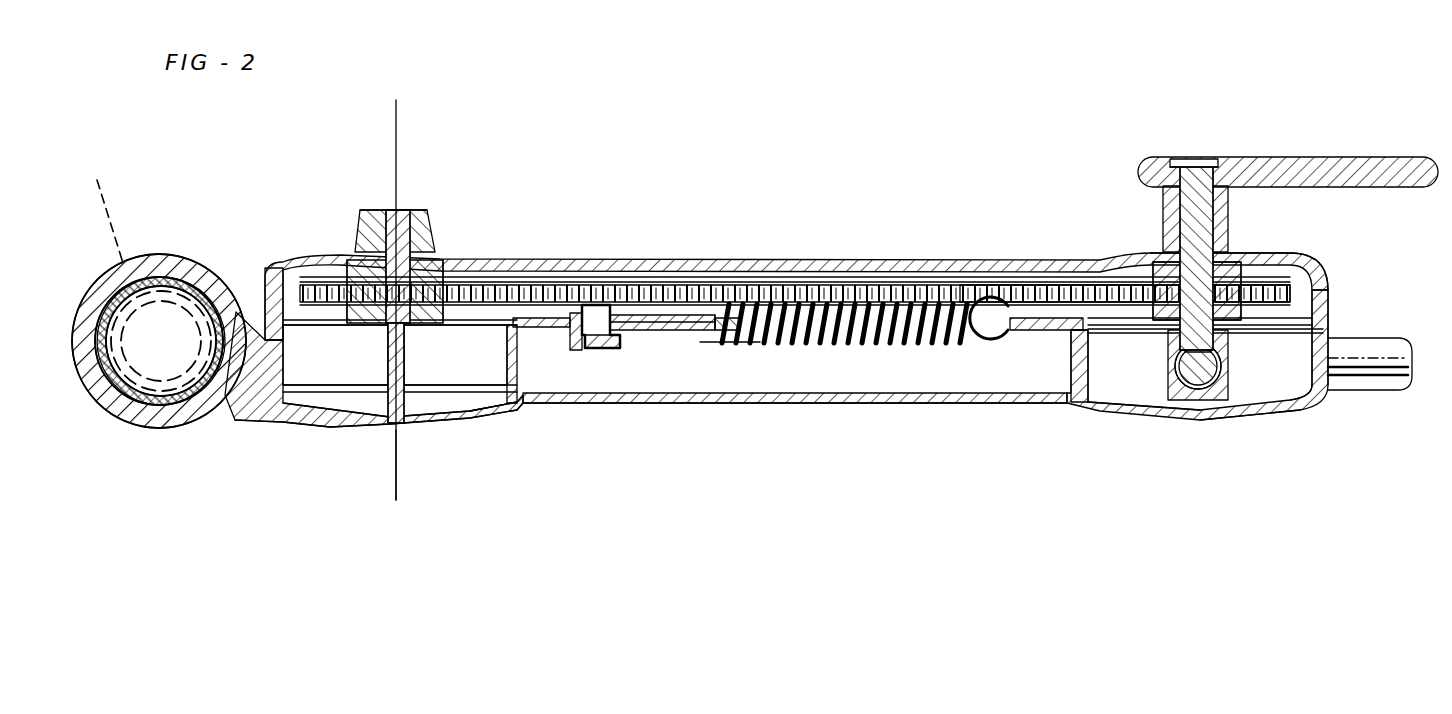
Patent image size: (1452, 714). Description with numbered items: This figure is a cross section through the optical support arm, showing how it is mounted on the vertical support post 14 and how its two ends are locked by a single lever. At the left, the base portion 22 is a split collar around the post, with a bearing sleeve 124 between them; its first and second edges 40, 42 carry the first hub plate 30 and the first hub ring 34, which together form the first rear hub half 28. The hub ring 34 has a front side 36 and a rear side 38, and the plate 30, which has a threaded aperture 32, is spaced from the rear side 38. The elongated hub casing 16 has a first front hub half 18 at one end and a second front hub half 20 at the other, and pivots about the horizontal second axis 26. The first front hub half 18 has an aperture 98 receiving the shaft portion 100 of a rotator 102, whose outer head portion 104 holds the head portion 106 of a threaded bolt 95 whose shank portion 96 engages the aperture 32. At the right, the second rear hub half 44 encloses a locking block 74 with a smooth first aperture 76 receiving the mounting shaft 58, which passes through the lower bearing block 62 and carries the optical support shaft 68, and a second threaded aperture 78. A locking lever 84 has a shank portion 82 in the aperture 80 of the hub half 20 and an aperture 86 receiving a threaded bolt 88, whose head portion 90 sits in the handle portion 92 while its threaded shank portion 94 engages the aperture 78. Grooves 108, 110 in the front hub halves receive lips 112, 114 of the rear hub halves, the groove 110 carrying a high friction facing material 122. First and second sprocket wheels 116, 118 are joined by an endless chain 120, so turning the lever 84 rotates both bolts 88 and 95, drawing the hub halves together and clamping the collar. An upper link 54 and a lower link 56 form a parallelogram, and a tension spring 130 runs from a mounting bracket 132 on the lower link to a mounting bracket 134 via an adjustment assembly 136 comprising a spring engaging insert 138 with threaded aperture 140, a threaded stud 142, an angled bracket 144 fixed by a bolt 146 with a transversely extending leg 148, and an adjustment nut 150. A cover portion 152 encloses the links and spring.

The vertical support post 14 is at (103, 210).
The hub casing 16 is at (753, 257).
The first front hub half 18 is at (320, 248).
The second front hub half 20 is at (1333, 267).
The base portion 22 is at (134, 428).
The second horizontally oriented axis 26 is at (396, 495).
The first rear hub half 28 is at (323, 428).
The first hub plate 30 is at (474, 418).
The threaded aperture 32 is at (377, 423).
The first hub ring 34 is at (516, 418).
The front side 36 is at (274, 268).
The rear side 38 is at (272, 415).
The first edge 40 is at (225, 312).
The second edge 42 is at (231, 418).
The second rear hub half 44 is at (1216, 430).
The upper link 54 is at (548, 300).
The lower link 56 is at (1088, 300).
The mounting shaft 58 is at (1220, 407).
The lower bearing block 62 is at (1190, 408).
The optical support shaft 68 is at (1378, 391).
The locking block 74 is at (1160, 410).
The first aperture 76 is at (1248, 378).
The second threaded aperture 78 is at (1253, 407).
The aperture 80 is at (1150, 252).
The shank portion 82 is at (1165, 285).
The locking lever 84 is at (1324, 152).
The aperture 86 is at (1208, 165).
The threaded bolt 88 is at (1192, 150).
The head portion 90 is at (1185, 170).
The handle portion 92 is at (1248, 168).
The threaded shank portion 94 is at (1160, 372).
The threaded bolt 95 is at (399, 200).
The shank portion 96 is at (415, 427).
The aperture 98 is at (436, 238).
The shaft portion 100 is at (355, 224).
The rotator 102 is at (366, 200).
The outer head portion 104 is at (432, 215).
The head portion 106 is at (412, 205).
The groove portion 108 is at (303, 347).
The groove portion 110 is at (1327, 322).
The lip portion 112 is at (503, 335).
The lip portion 114 is at (1318, 408).
The first sprocket wheel 116 is at (497, 318).
The second sprocket wheel 118 is at (1296, 258).
The endless chain 120 is at (829, 303).
The high friction facing material 122 is at (1320, 405).
The bearing sleeve 124 is at (167, 262).
The tension spring 130 is at (850, 346).
The mounting bracket 132 is at (1018, 290).
The mounting bracket 134 is at (560, 315).
The adjustment assembly 136 is at (597, 362).
The spring engaging insert 138 is at (690, 332).
The threaded aperture 140 is at (725, 343).
The threaded stud 142 is at (663, 332).
The angled bracket 144 is at (623, 349).
The bolt 146 is at (588, 316).
The transversely extending leg 148 is at (646, 316).
The adjustment nut 150 is at (625, 330).
The cover portion 152 is at (1002, 404).